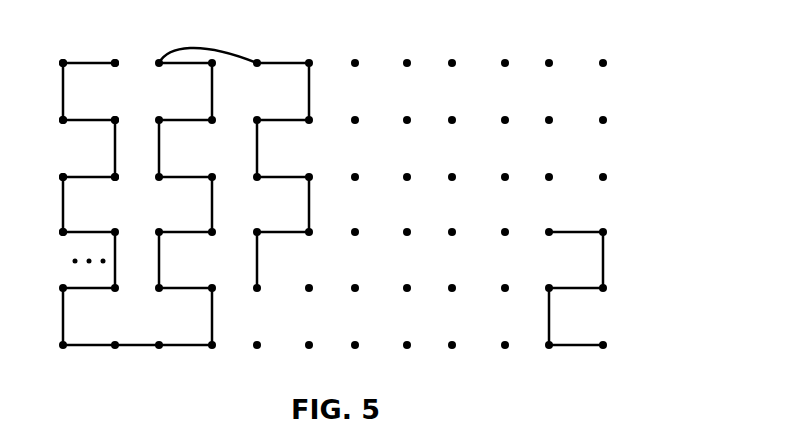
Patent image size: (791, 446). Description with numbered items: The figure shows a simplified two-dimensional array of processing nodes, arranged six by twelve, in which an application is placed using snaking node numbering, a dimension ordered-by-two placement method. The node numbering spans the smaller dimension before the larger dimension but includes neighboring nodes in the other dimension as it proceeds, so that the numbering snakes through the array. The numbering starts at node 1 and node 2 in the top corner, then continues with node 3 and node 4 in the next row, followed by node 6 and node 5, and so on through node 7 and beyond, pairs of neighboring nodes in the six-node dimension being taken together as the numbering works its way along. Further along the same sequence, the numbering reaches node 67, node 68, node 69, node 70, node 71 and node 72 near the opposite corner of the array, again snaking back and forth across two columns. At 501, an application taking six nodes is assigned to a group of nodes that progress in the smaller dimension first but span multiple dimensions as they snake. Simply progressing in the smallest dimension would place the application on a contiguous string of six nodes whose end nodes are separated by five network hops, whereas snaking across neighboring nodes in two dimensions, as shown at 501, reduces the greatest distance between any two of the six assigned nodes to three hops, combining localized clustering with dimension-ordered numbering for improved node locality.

The node 1 is at (115, 48).
The node 2 is at (62, 48).
The node 3 is at (53, 120).
The node 4 is at (125, 120).
The node 5 is at (125, 177).
The node 6 is at (53, 177).
The node 7 is at (53, 252).
The node 67 is at (551, 218).
The node 68 is at (620, 235).
The node 69 is at (620, 292).
The node 70 is at (551, 275).
The node 71 is at (534, 347).
The node 72 is at (620, 347).
The application assigned to a group of six nodes 501 is at (642, 262).